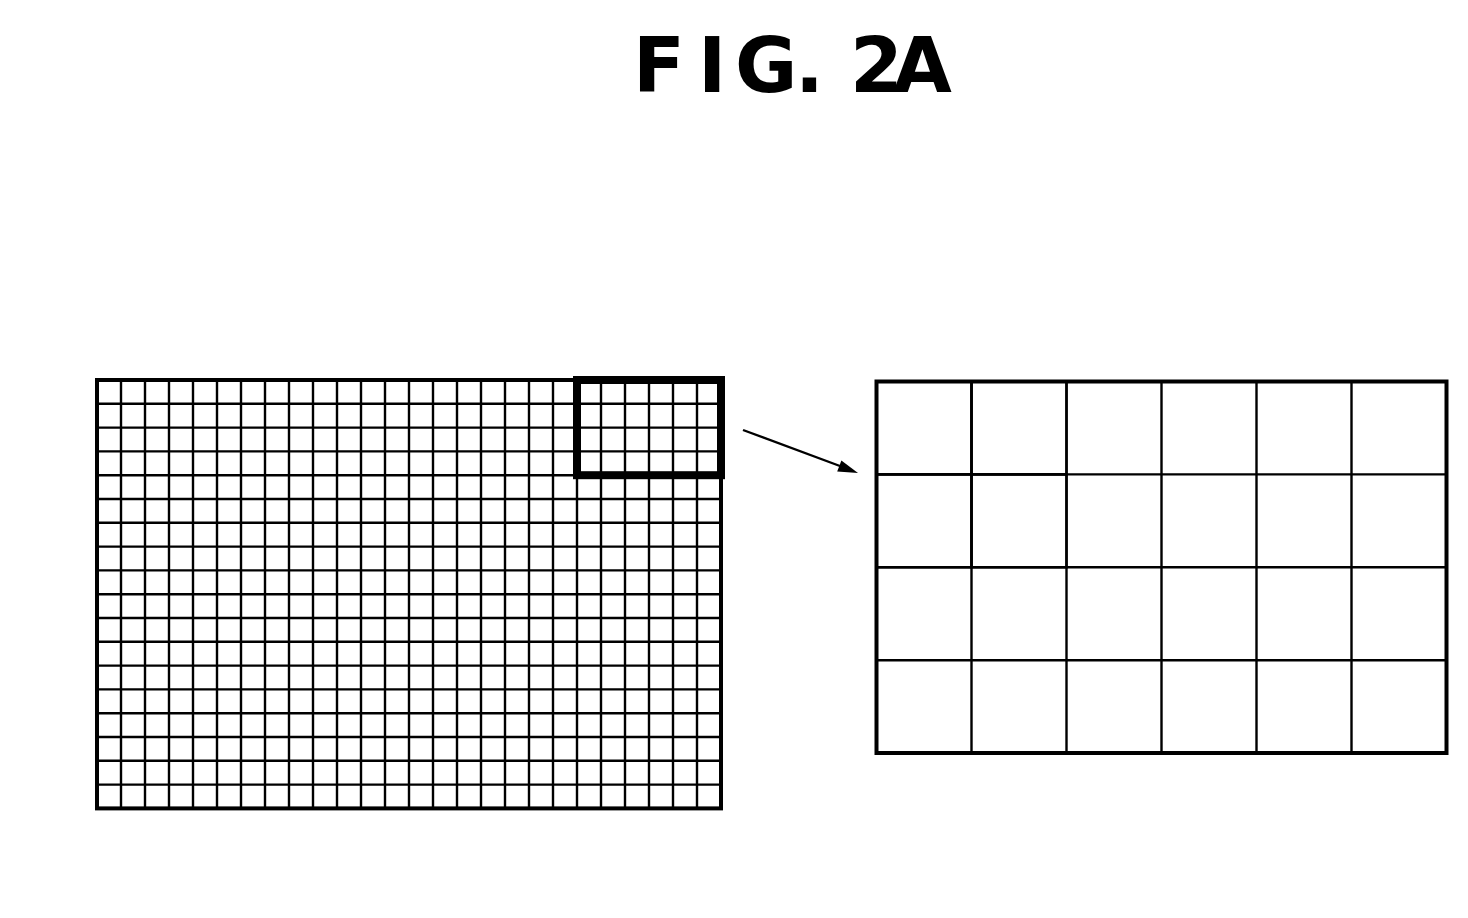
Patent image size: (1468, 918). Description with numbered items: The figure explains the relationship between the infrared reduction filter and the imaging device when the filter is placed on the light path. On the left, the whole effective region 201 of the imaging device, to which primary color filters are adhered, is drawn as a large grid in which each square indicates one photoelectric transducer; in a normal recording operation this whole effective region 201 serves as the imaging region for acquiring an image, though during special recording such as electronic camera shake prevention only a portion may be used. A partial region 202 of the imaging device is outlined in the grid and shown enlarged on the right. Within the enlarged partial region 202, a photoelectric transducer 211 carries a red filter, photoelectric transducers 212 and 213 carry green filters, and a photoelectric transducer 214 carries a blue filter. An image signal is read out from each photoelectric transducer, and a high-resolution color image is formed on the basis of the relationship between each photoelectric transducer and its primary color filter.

The whole effective region of the imaging device 201 is at (432, 343).
The partial region of the imaging device 202 is at (678, 378).
The photoelectric transducer with red filter 211 is at (925, 395).
The photoelectric transducer with green filter 212 is at (898, 541).
The photoelectric transducer with green filter 213 is at (1018, 395).
The photoelectric transducer with blue filter 214 is at (1050, 495).